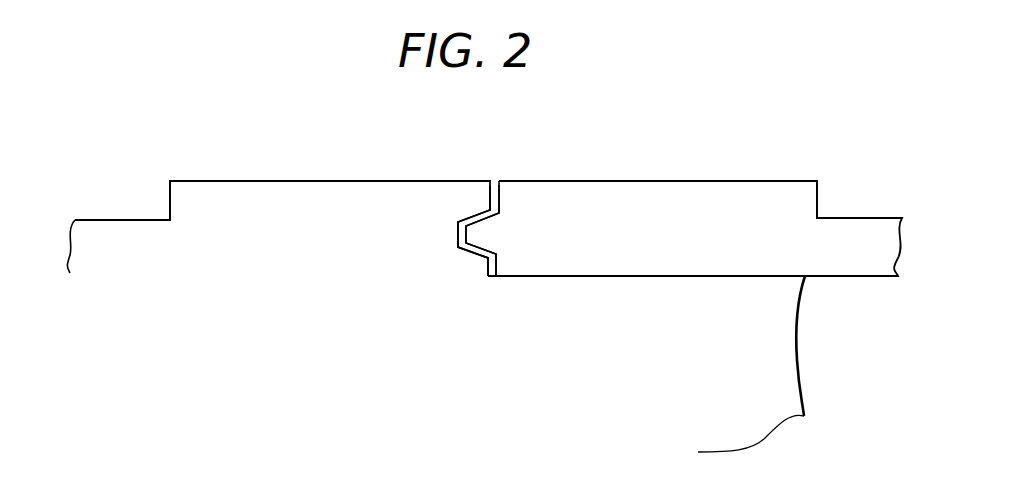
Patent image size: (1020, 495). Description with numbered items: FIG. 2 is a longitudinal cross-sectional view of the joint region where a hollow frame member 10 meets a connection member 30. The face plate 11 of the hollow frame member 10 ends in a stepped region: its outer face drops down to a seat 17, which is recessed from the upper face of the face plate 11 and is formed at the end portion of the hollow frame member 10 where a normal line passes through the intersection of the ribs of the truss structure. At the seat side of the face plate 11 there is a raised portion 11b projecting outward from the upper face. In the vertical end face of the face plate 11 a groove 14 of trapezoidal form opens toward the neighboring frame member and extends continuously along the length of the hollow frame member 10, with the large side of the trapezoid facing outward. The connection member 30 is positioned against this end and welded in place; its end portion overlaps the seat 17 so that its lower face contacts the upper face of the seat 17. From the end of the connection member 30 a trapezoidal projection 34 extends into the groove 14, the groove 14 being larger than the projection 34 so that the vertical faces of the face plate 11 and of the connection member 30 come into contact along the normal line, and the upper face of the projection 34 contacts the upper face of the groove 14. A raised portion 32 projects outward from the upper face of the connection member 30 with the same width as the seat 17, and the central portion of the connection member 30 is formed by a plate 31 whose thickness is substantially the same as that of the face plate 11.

The hollow frame member 10 is at (202, 137).
The face plate 11 is at (126, 232).
The raised portion 11b is at (298, 186).
The groove 14 is at (473, 256).
The seat 17 is at (773, 355).
The connection member 30 is at (787, 136).
The plate 31 is at (858, 237).
The raised portion 32 is at (608, 181).
The projection 34 is at (478, 232).